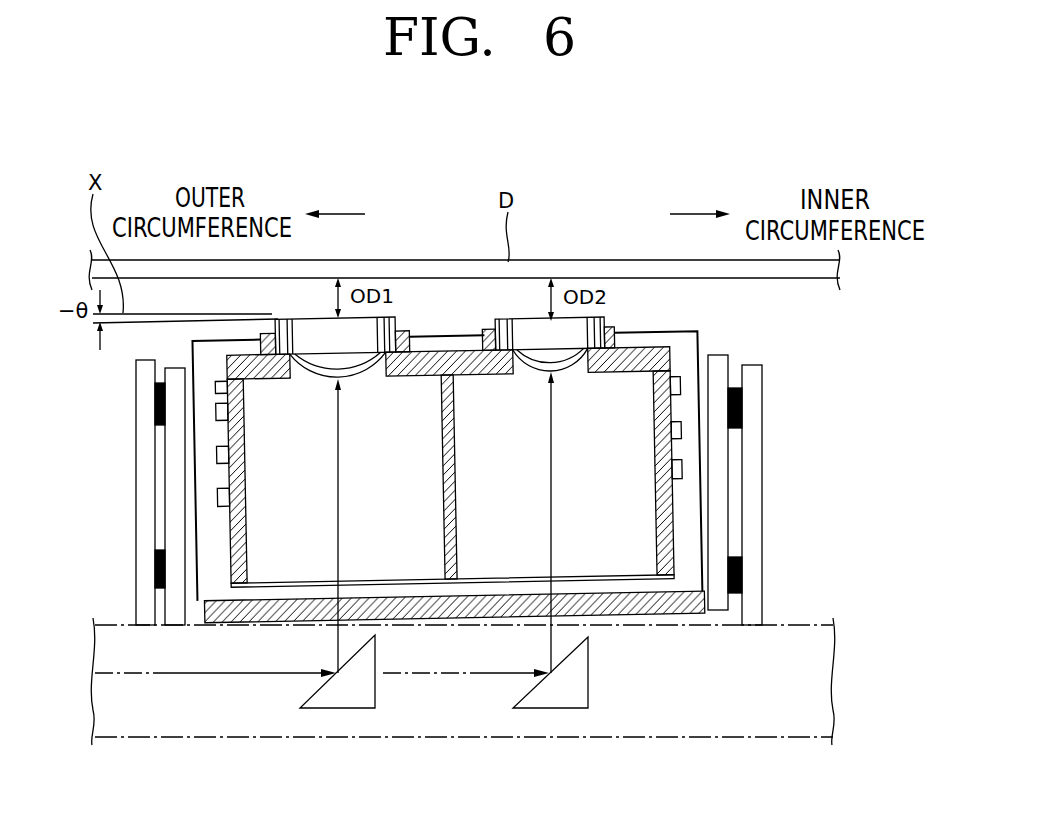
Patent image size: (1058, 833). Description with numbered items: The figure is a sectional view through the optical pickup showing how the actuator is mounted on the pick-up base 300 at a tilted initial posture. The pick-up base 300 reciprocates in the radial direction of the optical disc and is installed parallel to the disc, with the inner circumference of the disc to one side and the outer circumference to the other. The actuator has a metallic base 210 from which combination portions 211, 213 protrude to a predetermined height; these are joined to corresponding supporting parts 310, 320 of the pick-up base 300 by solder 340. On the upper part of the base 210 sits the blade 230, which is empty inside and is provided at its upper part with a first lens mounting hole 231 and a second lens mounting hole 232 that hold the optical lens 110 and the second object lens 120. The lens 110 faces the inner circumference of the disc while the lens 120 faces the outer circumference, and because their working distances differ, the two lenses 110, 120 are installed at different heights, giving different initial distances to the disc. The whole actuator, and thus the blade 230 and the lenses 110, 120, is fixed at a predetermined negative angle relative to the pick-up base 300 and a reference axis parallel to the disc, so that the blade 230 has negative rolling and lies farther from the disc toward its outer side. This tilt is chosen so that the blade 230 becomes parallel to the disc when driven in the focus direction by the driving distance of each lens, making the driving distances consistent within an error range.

The optical lens 110 is at (400, 318).
The second object lens 120 is at (612, 320).
The base 210 is at (242, 620).
The combination portion 211 is at (180, 462).
The combination portion 213 is at (718, 357).
The blade 230 is at (688, 567).
The first lens mounting hole 231 is at (383, 380).
The second lens mounting hole 232 is at (590, 372).
The pick-up base 300 is at (758, 720).
The supporting part 310 is at (135, 528).
The supporting part 320 is at (762, 492).
The solder 340 is at (157, 395).